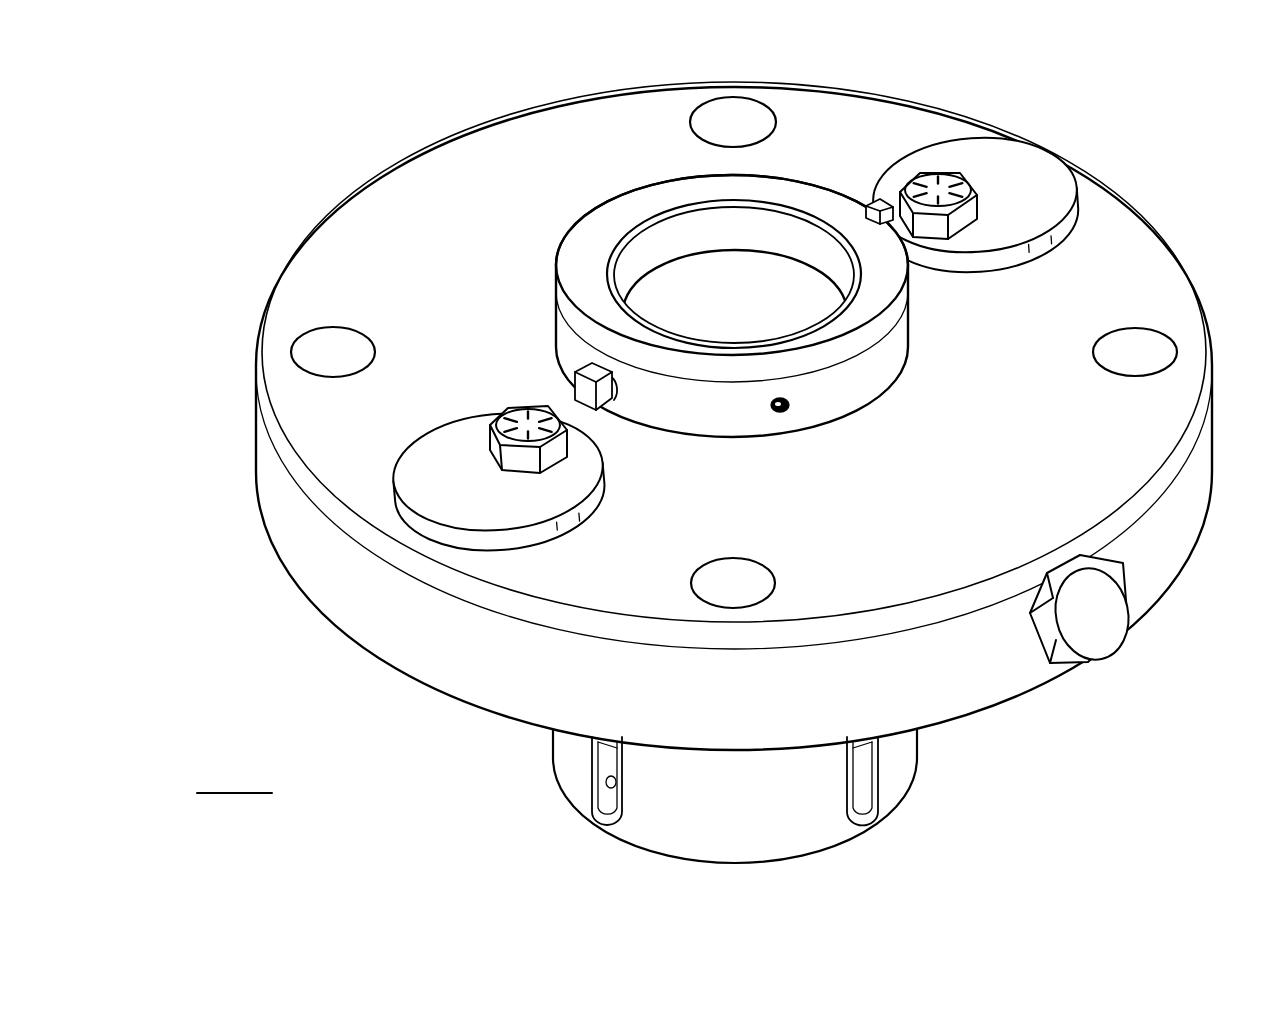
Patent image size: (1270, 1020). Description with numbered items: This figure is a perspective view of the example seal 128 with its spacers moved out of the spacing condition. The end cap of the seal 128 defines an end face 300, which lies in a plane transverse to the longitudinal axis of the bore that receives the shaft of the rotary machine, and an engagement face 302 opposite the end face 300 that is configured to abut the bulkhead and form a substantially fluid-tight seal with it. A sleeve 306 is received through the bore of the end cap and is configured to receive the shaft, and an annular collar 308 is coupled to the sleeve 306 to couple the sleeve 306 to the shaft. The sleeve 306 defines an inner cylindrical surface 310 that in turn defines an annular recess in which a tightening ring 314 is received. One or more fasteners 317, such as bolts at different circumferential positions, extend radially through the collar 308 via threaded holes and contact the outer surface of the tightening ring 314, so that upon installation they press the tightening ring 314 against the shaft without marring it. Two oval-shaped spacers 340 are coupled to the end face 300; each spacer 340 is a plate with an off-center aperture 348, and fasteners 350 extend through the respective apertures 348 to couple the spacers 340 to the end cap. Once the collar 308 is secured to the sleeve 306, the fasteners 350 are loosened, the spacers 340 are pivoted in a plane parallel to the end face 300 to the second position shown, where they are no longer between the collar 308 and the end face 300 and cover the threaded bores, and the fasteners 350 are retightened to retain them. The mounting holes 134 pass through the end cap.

The seal 128 is at (412, 128).
The mounting holes 134 is at (710, 100).
The end face 300 is at (332, 418).
The engagement face 302 is at (338, 632).
The sleeve 306 is at (688, 200).
The annular collar 308 is at (862, 325).
The inner cylindrical surface 310 is at (760, 215).
The tightening ring 314 is at (805, 245).
The fasteners 317 is at (572, 385).
The spacers 340 is at (477, 495).
The aperture 348 is at (556, 468).
The fasteners 350 is at (505, 412).